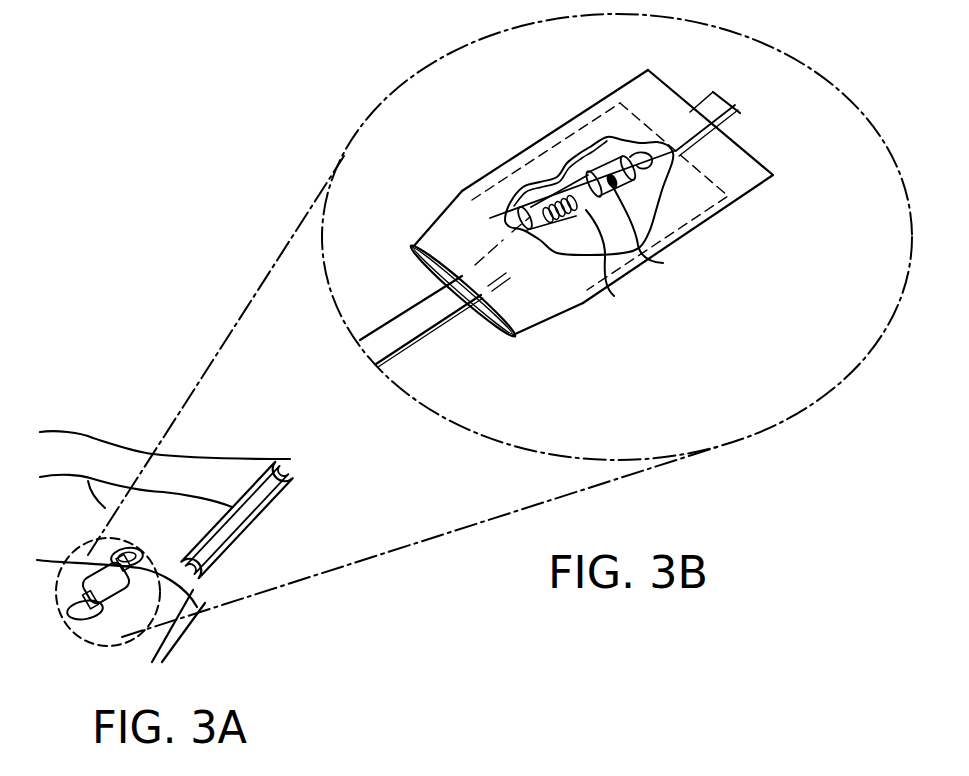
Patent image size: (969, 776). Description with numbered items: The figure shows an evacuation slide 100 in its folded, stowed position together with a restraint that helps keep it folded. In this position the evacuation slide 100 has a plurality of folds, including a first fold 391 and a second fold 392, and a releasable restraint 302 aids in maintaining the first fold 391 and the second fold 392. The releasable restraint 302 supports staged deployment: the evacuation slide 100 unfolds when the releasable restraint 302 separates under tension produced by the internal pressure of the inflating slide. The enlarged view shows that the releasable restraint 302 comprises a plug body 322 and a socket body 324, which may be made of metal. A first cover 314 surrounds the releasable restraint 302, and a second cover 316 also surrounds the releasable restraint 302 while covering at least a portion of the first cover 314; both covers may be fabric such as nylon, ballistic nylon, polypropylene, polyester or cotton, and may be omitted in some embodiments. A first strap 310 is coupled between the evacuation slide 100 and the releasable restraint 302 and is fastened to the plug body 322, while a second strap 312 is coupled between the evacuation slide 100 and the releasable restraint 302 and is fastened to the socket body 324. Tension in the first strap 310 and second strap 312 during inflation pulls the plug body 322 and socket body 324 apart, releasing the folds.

In FIG. 3A, the evacuation slide 100 is at (92, 457).
In FIG. 3A, the first fold 391 is at (288, 458).
In FIG. 3A, the second fold 392 is at (197, 606).
In FIG. 3B, the releasable restraint 302 is at (586, 147).
In FIG. 3B, the first strap 310 is at (379, 330).
In FIG. 3B, the second strap 312 is at (722, 110).
In FIG. 3B, the first cover 314 is at (442, 221).
In FIG. 3B, the second cover 316 is at (747, 180).
In FIG. 3B, the plug body 322 is at (621, 263).
In FIG. 3B, the socket body 324 is at (658, 234).